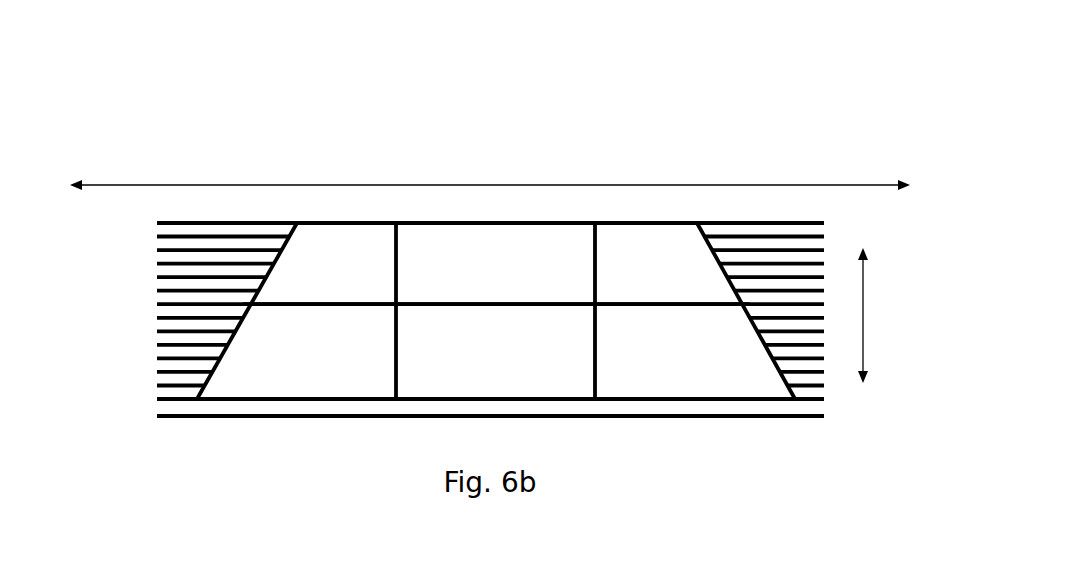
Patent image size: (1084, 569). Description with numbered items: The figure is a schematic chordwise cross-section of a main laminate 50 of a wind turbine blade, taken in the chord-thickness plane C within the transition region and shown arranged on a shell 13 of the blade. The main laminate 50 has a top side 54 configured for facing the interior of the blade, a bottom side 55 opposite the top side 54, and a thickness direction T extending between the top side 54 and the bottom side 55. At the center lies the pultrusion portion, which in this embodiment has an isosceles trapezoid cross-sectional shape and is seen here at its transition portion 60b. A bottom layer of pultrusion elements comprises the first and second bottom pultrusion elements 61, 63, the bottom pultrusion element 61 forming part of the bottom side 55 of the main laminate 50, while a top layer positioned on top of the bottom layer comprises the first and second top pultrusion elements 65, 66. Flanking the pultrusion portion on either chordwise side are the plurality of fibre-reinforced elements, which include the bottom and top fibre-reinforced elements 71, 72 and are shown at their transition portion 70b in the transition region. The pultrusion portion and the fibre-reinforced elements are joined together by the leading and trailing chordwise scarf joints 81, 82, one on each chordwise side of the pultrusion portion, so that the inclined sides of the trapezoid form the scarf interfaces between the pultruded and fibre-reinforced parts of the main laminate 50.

The main laminate 50 is at (466, 114).
The top side 54 is at (435, 222).
The bottom side 55 is at (575, 400).
The transition portion 60b is at (506, 376).
The first bottom pultrusion element 61 is at (302, 382).
The second bottom pultrusion element 63 is at (710, 380).
The first top pultrusion element 65 is at (350, 255).
The second top pultrusion element 66 is at (657, 250).
The transition portion 70b is at (772, 240).
The bottom fibre-reinforced element 71 is at (155, 390).
The top fibre-reinforced element 72 is at (155, 228).
The leading chordwise scarf joint 81 is at (243, 323).
The trailing chordwise scarf joint 82 is at (747, 336).
The shell 13 is at (195, 402).
The chord-thickness plane C is at (233, 185).
The thickness direction T is at (868, 362).